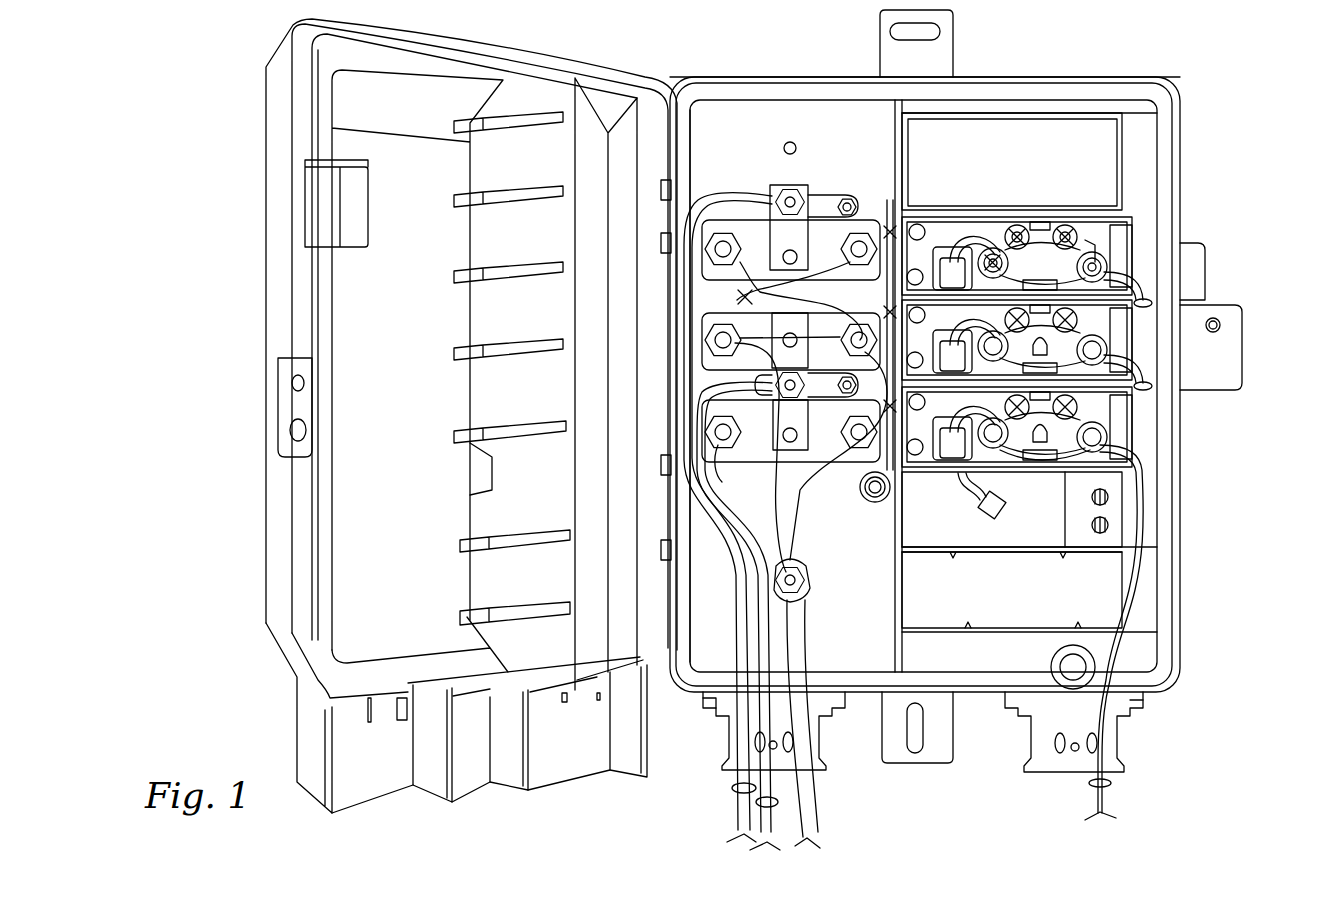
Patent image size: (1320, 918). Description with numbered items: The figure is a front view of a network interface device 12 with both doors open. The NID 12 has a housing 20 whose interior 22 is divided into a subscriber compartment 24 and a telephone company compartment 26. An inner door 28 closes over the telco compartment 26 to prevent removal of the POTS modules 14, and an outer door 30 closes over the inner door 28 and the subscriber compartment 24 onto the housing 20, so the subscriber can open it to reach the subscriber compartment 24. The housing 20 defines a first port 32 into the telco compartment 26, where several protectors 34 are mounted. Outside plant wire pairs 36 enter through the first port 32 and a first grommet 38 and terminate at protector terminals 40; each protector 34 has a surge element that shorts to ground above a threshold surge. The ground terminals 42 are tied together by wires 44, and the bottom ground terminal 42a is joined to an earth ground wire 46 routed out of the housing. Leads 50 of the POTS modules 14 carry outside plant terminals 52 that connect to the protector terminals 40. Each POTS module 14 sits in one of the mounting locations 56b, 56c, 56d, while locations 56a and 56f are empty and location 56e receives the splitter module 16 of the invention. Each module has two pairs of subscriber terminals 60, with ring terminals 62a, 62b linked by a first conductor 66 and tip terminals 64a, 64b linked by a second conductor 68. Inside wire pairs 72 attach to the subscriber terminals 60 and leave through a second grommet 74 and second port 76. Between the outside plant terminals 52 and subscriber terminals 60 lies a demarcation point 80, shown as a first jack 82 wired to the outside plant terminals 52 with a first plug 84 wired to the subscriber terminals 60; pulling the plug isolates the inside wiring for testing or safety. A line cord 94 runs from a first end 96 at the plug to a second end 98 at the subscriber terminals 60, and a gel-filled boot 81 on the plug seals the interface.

The network interface device 12 is at (1183, 630).
The POTS module 14 is at (1120, 228).
The splitter module 16 is at (1110, 510).
The housing 20 is at (710, 82).
The interior 22 is at (813, 110).
The subscriber compartment 24 is at (1018, 107).
The telephone company compartment 26 is at (758, 100).
The inner door 28 is at (607, 100).
The outer door 30 is at (427, 50).
The first port 32 is at (728, 750).
The protector 34 is at (700, 230).
The outside plant wire pair 36 is at (735, 297).
The first grommet 38 is at (718, 706).
The protector terminal 40 is at (718, 240).
The ground terminal 42 is at (790, 200).
The bottom ground terminal 42a is at (806, 580).
The wire 44 is at (700, 266).
The earth ground wire 46 is at (808, 805).
The lead 50 is at (888, 227).
The outside plant terminal 52 is at (768, 210).
The mounting location 56a is at (1112, 133).
The mounting location 56b is at (1140, 230).
The mounting location 56c is at (1140, 355).
The mounting location 56d is at (1140, 422).
The mounting location 56e is at (1146, 522).
The mounting location 56f is at (1143, 573).
The subscriber terminal 60 is at (1075, 268).
The ring terminal 62a is at (1055, 232).
The ring terminal 62b is at (1092, 250).
The tip terminal 64a is at (1014, 232).
The tip terminal 64b is at (998, 258).
The first conductor 66 is at (1090, 255).
The second conductor 68 is at (990, 252).
The inside wire pair 72 is at (1152, 300).
The second grommet 74 is at (1128, 711).
The second port 76 is at (1122, 744).
The demarcation point 80 is at (940, 255).
The boot 81 is at (917, 224).
The first jack 82 is at (930, 356).
The first plug 84 is at (945, 258).
The line cord 94 is at (960, 240).
The first end 96 is at (935, 438).
The second end 98 is at (1008, 430).